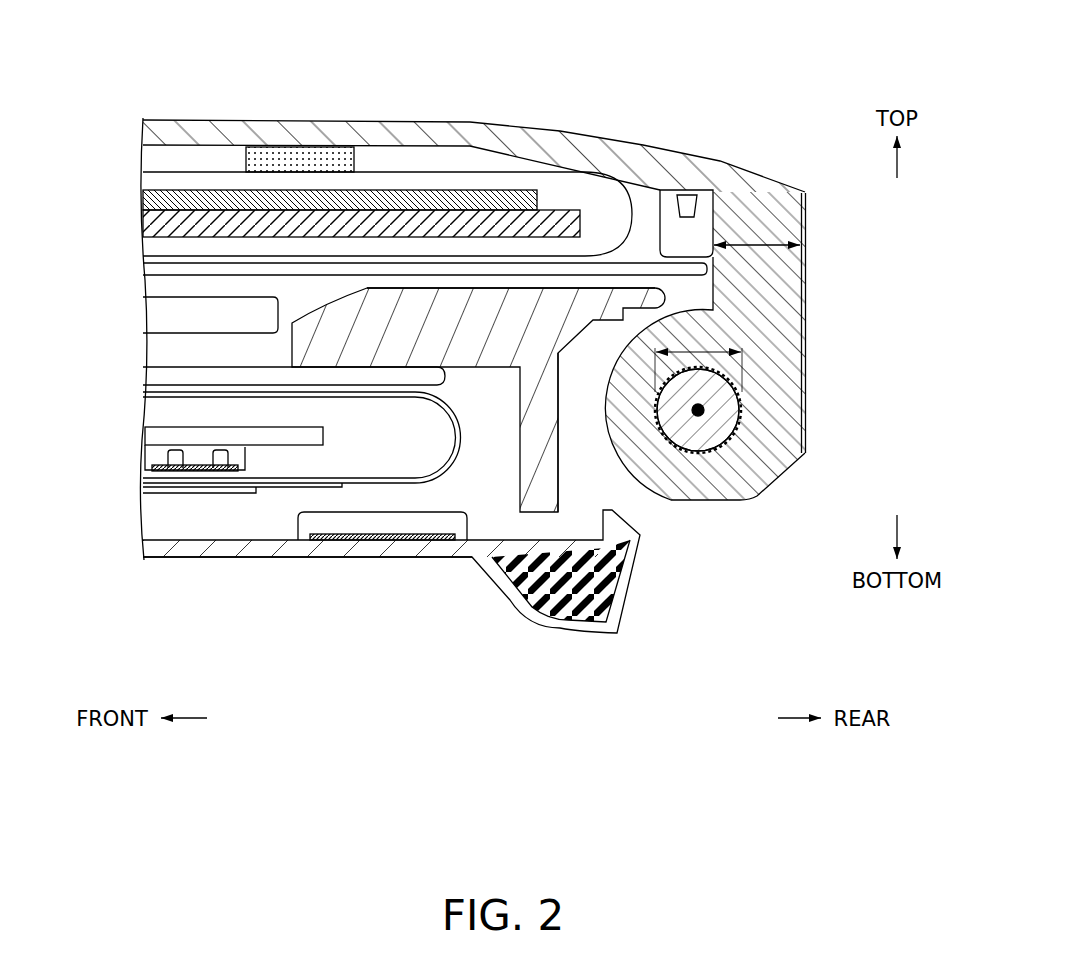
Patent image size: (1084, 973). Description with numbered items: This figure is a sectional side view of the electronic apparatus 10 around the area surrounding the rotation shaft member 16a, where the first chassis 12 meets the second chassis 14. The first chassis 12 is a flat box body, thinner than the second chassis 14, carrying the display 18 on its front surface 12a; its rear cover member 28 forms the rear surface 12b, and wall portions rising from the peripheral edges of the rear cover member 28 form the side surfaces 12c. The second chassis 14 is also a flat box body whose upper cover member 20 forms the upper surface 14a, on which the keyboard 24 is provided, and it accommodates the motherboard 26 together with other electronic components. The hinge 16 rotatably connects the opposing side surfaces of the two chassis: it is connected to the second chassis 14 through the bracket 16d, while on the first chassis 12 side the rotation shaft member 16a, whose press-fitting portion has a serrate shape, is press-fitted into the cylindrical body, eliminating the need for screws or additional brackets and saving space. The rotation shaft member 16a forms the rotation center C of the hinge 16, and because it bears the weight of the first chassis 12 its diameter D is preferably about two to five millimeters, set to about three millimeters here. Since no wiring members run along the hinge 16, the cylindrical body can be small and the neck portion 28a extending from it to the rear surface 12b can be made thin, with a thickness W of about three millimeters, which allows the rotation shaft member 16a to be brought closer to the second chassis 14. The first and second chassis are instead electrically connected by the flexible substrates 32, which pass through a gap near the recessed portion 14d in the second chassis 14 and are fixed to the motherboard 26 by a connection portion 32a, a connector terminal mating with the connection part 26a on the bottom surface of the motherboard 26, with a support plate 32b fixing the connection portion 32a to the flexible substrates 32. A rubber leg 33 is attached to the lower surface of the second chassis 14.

The electronic apparatus 10 is at (746, 77).
The first chassis 12 is at (533, 109).
The front surface 12a is at (260, 281).
The rear surface 12b is at (274, 118).
The side surfaces 12c is at (804, 208).
The second chassis 14 is at (336, 627).
The upper surface 14a is at (460, 285).
The recessed portion 14d is at (577, 457).
The hinge 16 is at (771, 413).
The rotation shaft member 16a is at (717, 428).
The bracket 16d is at (718, 477).
The display 18 is at (383, 222).
The upper cover member 20 is at (535, 327).
The keyboard 24 is at (191, 286).
The motherboard 26 is at (160, 435).
The connection part 26a is at (158, 455).
The rear cover member 28 is at (447, 132).
The neck portion 28a is at (772, 272).
The flexible substrates 32 is at (378, 485).
The connection portion 32a is at (147, 484).
The support plate 32b is at (287, 488).
The rubber leg 33 is at (577, 598).
The thickness of the neck portion W is at (804, 240).
The diameter of the rotation shaft member D is at (745, 352).
The rotation center C is at (700, 412).